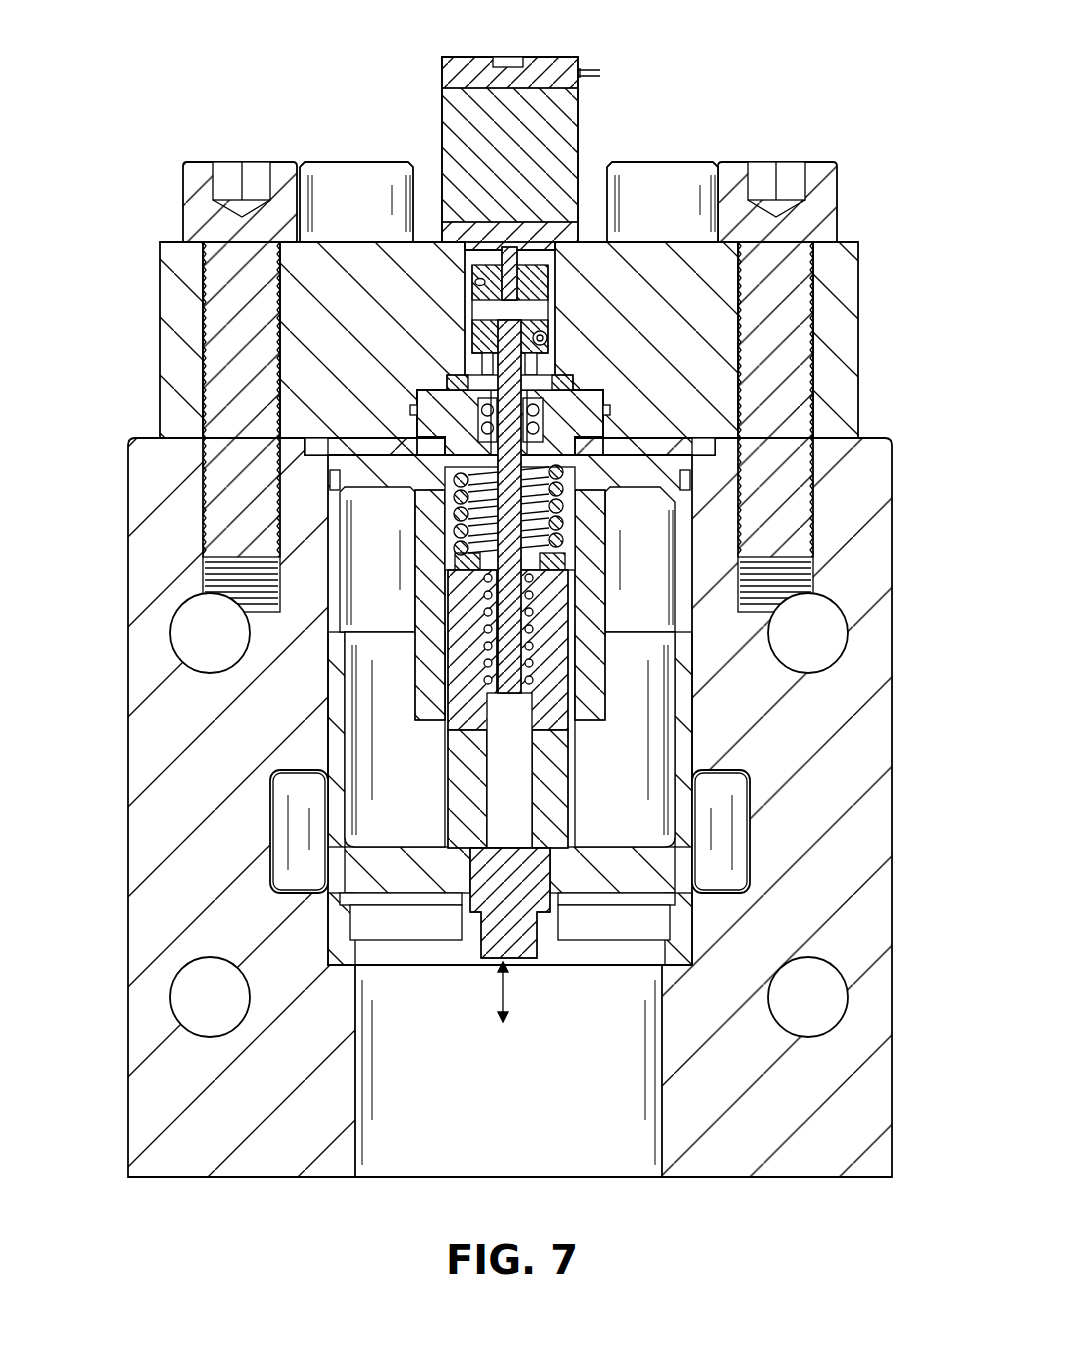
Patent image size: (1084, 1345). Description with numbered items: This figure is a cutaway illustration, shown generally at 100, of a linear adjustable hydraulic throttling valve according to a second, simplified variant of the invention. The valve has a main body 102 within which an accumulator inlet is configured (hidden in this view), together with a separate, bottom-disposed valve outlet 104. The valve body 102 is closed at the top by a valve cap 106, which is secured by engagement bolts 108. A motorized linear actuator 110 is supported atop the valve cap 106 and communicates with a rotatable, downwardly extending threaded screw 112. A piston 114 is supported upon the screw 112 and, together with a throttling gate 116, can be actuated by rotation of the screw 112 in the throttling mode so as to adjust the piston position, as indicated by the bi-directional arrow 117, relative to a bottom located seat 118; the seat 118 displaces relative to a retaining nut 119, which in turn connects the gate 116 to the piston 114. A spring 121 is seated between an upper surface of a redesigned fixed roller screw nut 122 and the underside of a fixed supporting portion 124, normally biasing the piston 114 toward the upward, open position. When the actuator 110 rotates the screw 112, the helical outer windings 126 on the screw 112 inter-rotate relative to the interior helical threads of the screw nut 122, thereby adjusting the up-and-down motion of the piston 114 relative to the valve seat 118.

The linear adjustable hydraulic throttling valve 100 is at (237, 98).
The main body 102 is at (137, 756).
The valve outlet 104 is at (400, 1178).
The valve cap 106 is at (860, 348).
The engagement bolts 108 is at (183, 200).
The motorized linear actuator 110 is at (441, 109).
The threaded screw 112 is at (520, 470).
The piston 114 is at (545, 770).
The throttling gate 116 is at (678, 775).
The bi-directional arrow 117 is at (507, 992).
The seat 118 is at (497, 938).
The retaining nut 119 is at (460, 928).
The spring 121 is at (473, 540).
The roller screw nut 122 is at (463, 607).
The fixed supporting portion 124 is at (440, 410).
The helical outer windings 126 is at (548, 485).